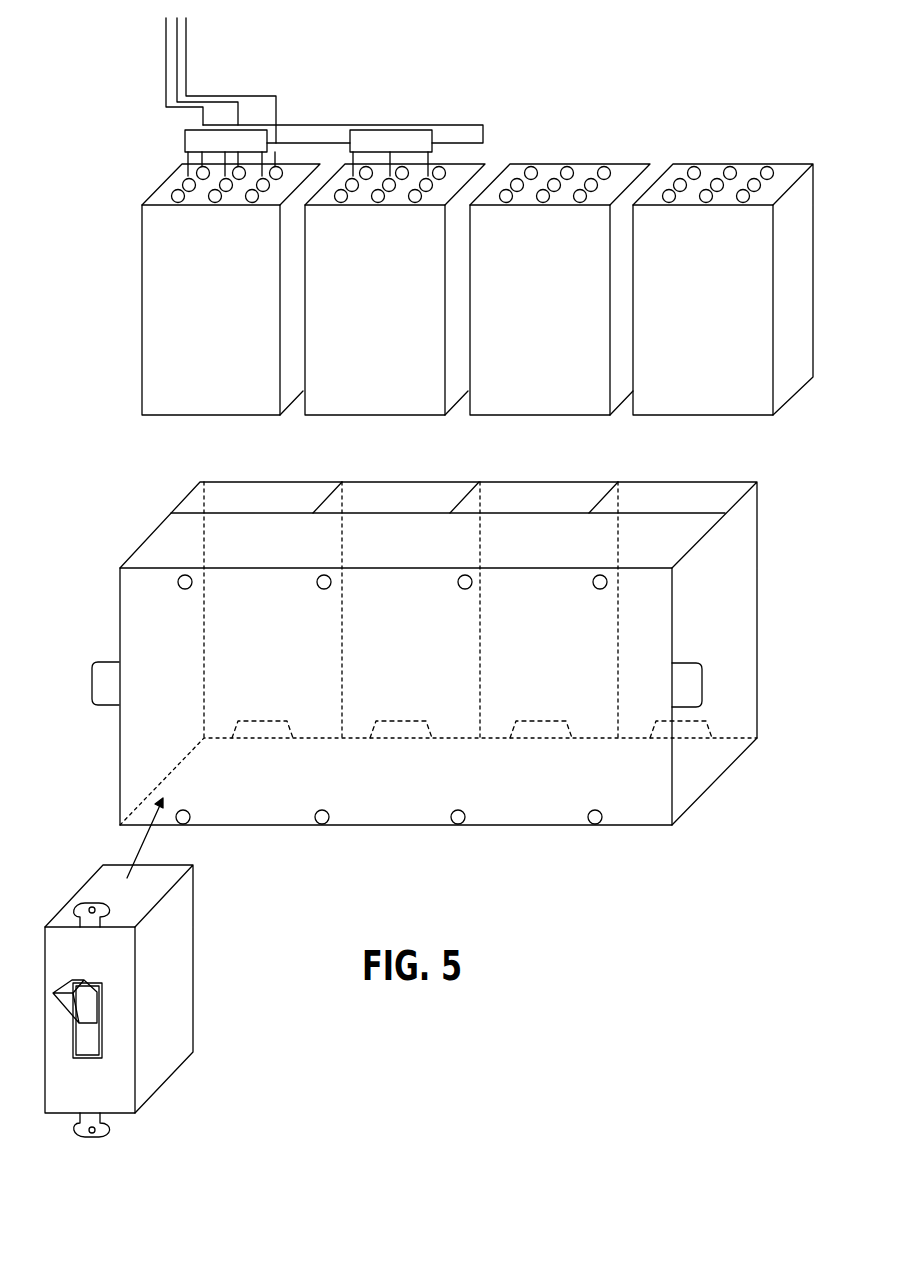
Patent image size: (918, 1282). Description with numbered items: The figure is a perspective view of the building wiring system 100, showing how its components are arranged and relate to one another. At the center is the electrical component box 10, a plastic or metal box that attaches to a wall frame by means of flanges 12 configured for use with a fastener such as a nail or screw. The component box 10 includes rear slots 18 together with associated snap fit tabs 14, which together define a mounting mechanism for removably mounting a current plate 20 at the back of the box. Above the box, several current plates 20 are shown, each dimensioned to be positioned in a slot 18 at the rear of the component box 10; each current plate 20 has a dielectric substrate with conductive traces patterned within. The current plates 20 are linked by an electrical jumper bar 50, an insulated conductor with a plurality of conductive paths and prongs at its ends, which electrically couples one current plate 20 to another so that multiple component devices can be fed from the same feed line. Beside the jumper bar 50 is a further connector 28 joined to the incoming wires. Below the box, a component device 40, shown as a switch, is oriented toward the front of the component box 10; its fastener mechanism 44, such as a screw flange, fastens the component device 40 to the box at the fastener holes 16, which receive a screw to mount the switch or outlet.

The building wiring system 100 is at (72, 306).
The electrical component box 10 is at (133, 531).
The flanges 12 is at (92, 683).
The snap fit tabs 14 is at (397, 729).
The fastener holes 16 is at (460, 825).
The rear slots 18 is at (694, 500).
The current plate 20 is at (196, 336).
The input connector 28 is at (180, 179).
The component device 40 is at (201, 985).
The fastener mechanism 44 is at (107, 1133).
The electrical jumper bar 50 is at (355, 123).